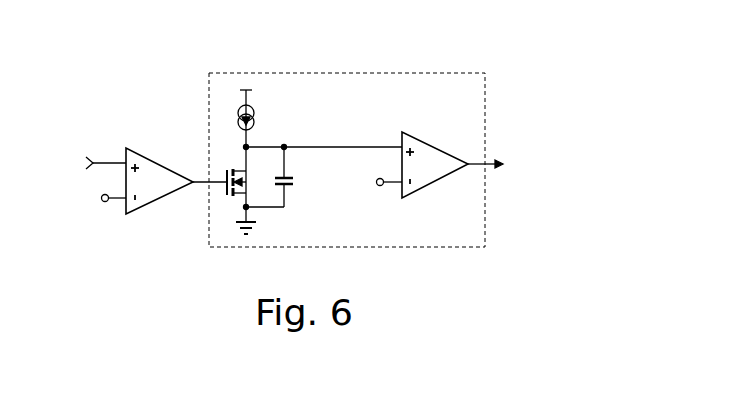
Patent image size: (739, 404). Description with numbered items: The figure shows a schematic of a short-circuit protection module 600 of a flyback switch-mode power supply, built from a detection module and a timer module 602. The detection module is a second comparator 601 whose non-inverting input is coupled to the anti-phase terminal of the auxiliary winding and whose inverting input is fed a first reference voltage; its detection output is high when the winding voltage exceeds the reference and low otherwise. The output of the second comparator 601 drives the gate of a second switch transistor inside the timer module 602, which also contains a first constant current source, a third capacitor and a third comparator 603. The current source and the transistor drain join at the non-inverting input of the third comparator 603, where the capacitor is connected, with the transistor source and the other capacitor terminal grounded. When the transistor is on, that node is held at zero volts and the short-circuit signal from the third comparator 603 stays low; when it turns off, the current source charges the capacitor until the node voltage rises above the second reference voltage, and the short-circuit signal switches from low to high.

The over-current detection circuit 600 is at (158, 38).
The second comparator 601 is at (152, 154).
The timing / charging block 602 is at (409, 73).
The third comparator 603 is at (430, 141).